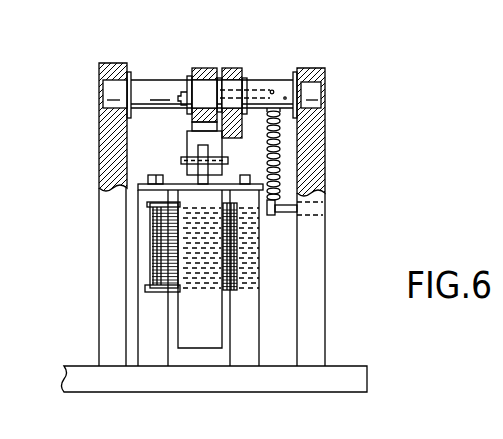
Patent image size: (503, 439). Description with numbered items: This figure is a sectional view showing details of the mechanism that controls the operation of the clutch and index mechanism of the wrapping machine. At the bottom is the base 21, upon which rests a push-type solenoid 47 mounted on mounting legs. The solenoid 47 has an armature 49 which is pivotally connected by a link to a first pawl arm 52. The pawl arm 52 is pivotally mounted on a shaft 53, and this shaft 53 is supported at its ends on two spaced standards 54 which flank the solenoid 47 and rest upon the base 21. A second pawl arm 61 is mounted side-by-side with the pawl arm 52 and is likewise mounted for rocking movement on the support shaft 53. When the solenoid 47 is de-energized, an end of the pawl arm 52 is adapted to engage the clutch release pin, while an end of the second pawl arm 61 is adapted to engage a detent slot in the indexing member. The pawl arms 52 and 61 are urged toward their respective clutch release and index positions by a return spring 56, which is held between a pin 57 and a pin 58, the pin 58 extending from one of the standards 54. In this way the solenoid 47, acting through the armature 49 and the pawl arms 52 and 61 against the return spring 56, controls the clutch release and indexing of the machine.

The base 21 is at (238, 390).
The push-type solenoid 47 is at (172, 273).
The armature 49 is at (178, 217).
The first pawl arm 52 is at (205, 70).
The shaft 53 is at (152, 79).
The standards 54 is at (100, 157).
The return spring 56 is at (278, 171).
The pin 57 is at (263, 90).
The pin 58 is at (283, 218).
The second pawl arm 61 is at (233, 68).